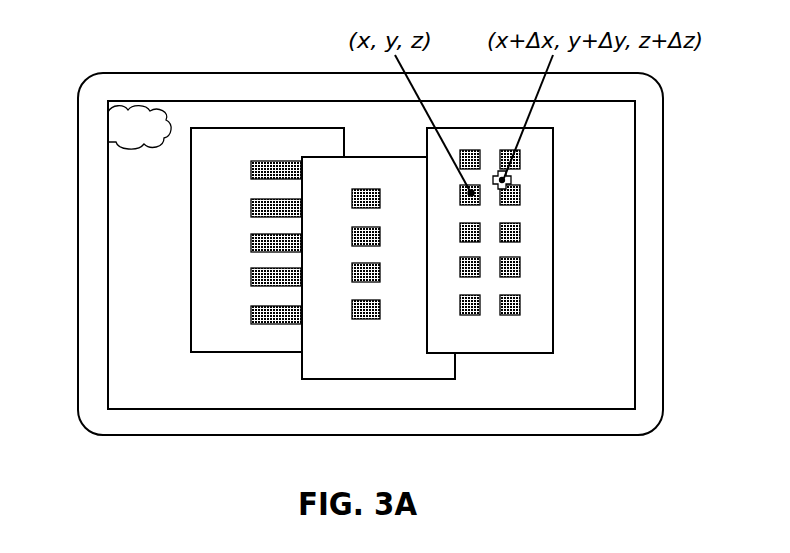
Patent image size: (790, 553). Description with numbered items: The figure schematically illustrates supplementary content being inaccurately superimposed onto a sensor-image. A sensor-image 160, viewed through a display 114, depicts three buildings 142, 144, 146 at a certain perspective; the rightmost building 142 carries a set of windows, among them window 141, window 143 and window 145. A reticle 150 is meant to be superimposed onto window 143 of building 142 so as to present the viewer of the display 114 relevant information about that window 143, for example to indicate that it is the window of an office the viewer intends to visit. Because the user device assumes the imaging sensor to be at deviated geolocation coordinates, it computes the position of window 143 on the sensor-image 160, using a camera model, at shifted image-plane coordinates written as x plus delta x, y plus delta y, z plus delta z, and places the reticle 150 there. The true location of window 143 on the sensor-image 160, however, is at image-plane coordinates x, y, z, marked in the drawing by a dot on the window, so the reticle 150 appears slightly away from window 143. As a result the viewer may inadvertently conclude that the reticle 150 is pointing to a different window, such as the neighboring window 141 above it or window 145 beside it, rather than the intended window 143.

The display 114 is at (213, 73).
The sensor-image 160 is at (176, 98).
The building 146 is at (191, 334).
The building 144 is at (456, 368).
The building 142 is at (522, 240).
The window 141 is at (520, 153).
The window 143 is at (480, 202).
The window 145 is at (520, 198).
The reticle 150 is at (513, 180).